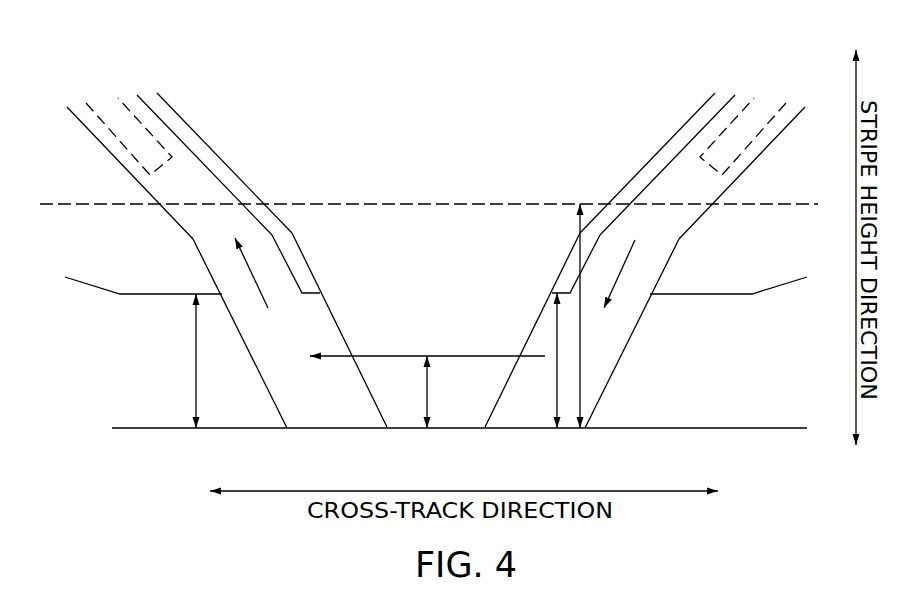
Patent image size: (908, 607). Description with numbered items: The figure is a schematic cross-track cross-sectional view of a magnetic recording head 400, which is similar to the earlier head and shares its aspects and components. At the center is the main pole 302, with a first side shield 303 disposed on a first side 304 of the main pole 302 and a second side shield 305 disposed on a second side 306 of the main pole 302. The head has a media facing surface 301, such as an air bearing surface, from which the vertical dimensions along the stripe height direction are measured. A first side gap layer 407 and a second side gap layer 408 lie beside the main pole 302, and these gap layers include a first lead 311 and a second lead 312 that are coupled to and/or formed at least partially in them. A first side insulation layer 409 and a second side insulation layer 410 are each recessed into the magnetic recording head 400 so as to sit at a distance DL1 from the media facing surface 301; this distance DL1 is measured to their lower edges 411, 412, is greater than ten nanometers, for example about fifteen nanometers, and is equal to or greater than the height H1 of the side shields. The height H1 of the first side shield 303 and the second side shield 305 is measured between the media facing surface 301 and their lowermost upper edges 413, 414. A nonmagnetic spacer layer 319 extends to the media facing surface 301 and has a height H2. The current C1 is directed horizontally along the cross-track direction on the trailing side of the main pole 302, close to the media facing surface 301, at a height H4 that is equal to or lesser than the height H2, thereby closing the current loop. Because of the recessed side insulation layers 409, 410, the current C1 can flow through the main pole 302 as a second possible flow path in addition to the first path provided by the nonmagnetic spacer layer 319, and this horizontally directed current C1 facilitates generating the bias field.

The magnetic recording head 400 is at (141, 37).
The media facing surface 301 is at (157, 430).
The main pole 302 is at (461, 293).
The first side shield 303 is at (800, 371).
The first side 304 is at (638, 347).
The second side shield 305 is at (176, 402).
The second side 306 is at (180, 353).
The first lead 311 is at (742, 152).
The second lead 312 is at (117, 140).
The nonmagnetic spacer layer 319 is at (60, 205).
The first side gap layer 407 is at (528, 410).
The second side gap layer 408 is at (322, 408).
The first side insulation layer 409 is at (632, 188).
The second side insulation layer 410 is at (233, 185).
The lower edge of first side insulation layer 411 is at (562, 294).
The lower edge of second side insulation layer 412 is at (305, 290).
The lowermost upper edge of first side shield 413 is at (737, 292).
The lowermost upper edge of second side shield 414 is at (143, 293).
The current C1 is at (250, 270).
The height of side shields H1 is at (200, 367).
The height of nonmagnetic spacer layer H2 is at (582, 385).
The height of current flow H4 is at (430, 390).
The distance of recessed insulation layers DL1 is at (557, 378).